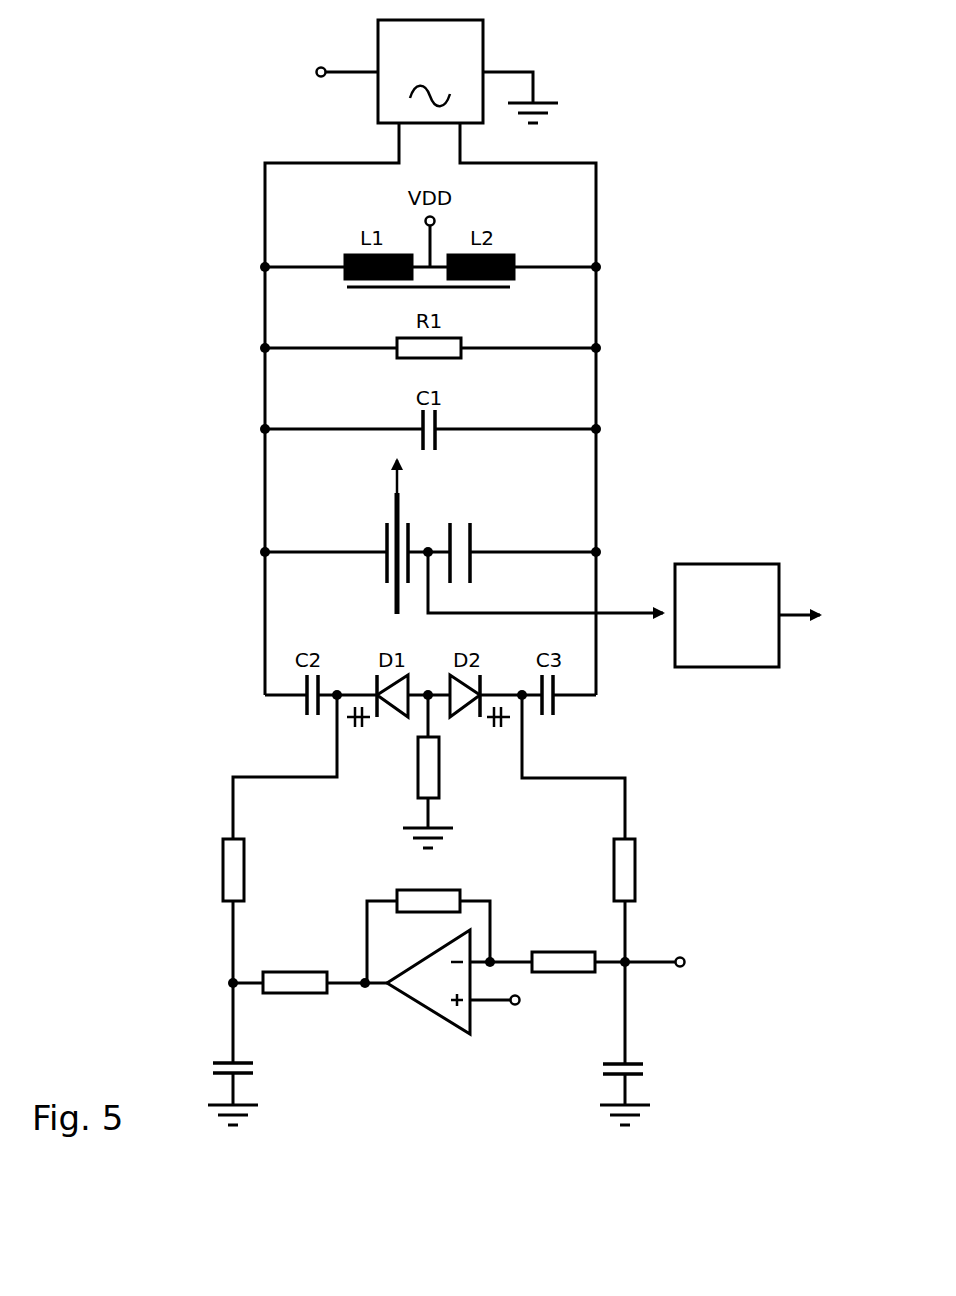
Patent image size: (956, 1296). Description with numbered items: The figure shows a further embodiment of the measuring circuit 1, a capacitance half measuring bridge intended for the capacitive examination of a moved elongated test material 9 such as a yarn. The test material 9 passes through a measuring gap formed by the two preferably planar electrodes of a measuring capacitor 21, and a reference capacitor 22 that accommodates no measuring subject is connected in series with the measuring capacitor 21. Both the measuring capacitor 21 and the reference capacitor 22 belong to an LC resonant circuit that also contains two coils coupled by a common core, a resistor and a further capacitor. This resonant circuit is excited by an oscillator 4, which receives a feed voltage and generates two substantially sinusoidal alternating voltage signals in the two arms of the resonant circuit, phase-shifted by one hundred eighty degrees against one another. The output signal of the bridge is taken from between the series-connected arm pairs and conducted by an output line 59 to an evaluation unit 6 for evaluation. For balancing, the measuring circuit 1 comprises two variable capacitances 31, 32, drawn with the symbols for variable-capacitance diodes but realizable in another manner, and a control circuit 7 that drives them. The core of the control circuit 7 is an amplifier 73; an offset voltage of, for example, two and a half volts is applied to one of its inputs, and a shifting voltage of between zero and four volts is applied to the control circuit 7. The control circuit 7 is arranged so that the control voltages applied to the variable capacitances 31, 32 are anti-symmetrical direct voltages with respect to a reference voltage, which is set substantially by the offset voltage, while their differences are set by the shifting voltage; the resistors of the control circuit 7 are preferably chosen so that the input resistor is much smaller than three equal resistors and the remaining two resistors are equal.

The measuring circuit 1 is at (737, 106).
The oscillator 4 is at (484, 27).
The evaluation unit 6 is at (722, 564).
The control circuit 7 is at (492, 910).
The test material 9 is at (395, 603).
The measuring capacitor 21 is at (386, 530).
The reference capacitor 22 is at (471, 530).
The variable capacitance 31 is at (376, 683).
The variable capacitance 32 is at (482, 683).
The output line 59 is at (630, 618).
The amplifier 73 is at (413, 1000).